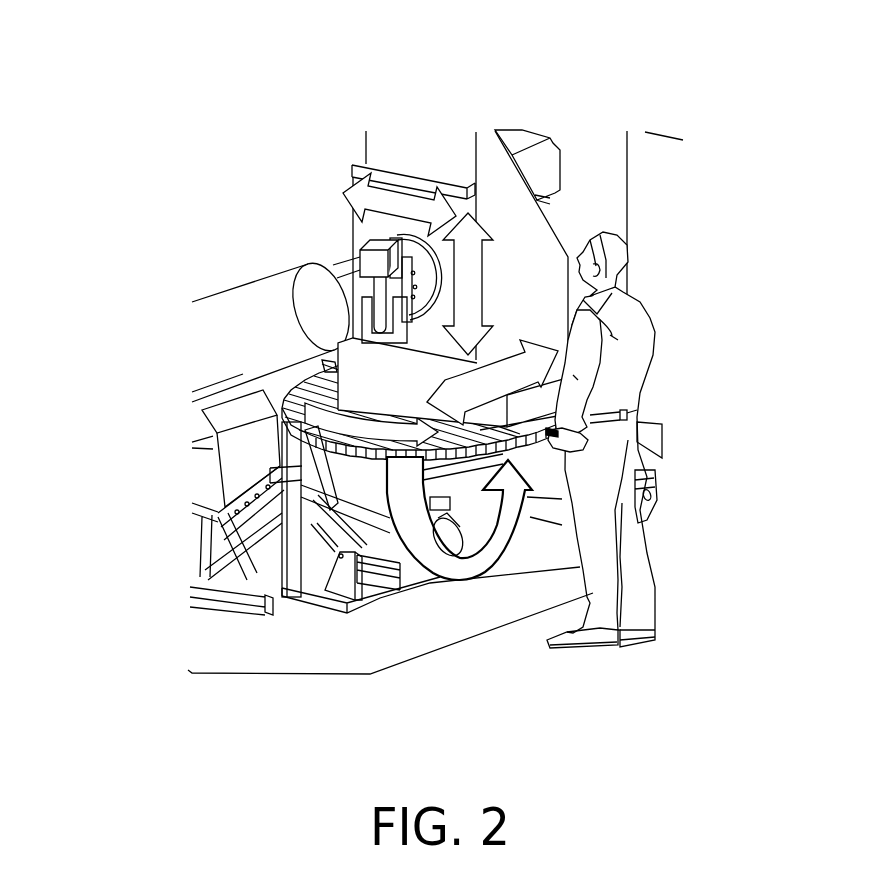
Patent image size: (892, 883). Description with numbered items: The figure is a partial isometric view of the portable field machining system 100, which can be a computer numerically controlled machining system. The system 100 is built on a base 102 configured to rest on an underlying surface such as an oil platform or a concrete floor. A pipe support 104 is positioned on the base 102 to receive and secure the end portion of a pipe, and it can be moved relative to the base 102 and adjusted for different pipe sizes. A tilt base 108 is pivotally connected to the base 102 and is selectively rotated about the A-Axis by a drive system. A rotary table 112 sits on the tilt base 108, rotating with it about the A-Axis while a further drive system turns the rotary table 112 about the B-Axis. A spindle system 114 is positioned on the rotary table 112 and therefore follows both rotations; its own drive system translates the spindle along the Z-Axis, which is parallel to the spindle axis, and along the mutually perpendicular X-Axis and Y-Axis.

The system 100 is at (415, 374).
The base 102 is at (447, 650).
The pipe support 104 is at (192, 468).
The tilt base 108 is at (538, 504).
The rotary table 112 is at (640, 434).
The spindle system 114 is at (487, 181).